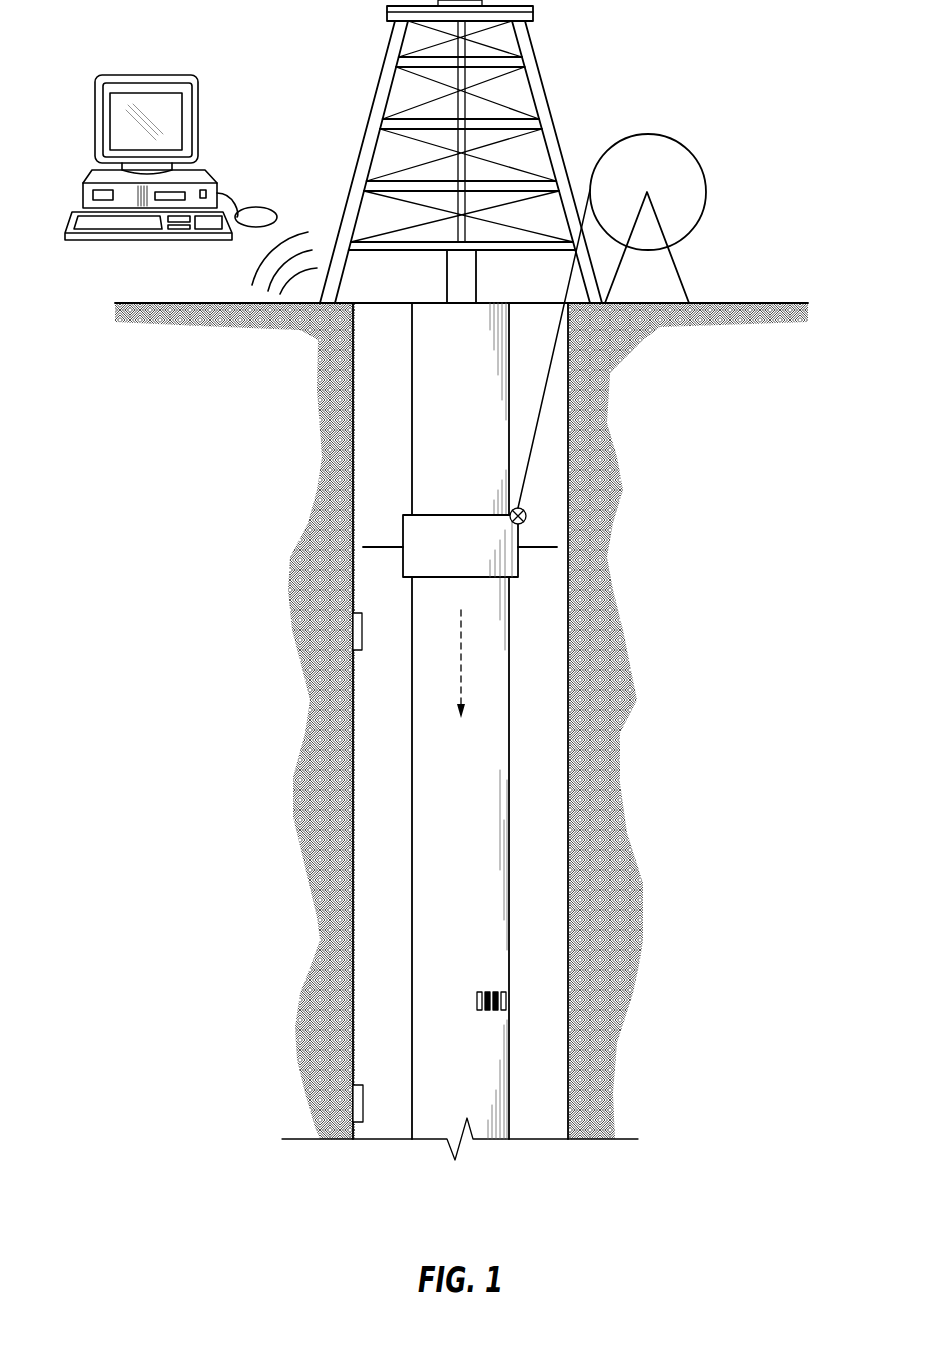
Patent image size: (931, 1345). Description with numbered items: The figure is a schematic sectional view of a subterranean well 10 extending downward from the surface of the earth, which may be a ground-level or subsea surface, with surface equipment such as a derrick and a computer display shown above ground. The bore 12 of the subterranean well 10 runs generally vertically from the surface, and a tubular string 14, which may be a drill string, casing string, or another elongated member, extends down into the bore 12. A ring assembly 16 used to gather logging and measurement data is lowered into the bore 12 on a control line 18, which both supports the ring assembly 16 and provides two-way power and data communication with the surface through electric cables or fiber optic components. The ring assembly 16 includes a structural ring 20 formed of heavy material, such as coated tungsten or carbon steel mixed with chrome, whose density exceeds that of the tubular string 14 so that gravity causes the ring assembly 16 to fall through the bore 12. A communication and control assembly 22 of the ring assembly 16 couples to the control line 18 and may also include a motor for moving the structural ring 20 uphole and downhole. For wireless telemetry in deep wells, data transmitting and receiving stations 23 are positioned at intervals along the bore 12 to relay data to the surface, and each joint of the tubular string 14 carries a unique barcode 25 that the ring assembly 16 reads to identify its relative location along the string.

The subterranean well 10 is at (704, 788).
The bore 12 is at (552, 888).
The tubular string 14 is at (412, 783).
The ring assembly 16 is at (467, 543).
The control line 18 is at (566, 290).
The structural ring 20 is at (521, 553).
The communication and control assembly 22 is at (528, 517).
The data transmitting and receiving stations 23 is at (365, 1102).
The barcode 25 is at (508, 1000).